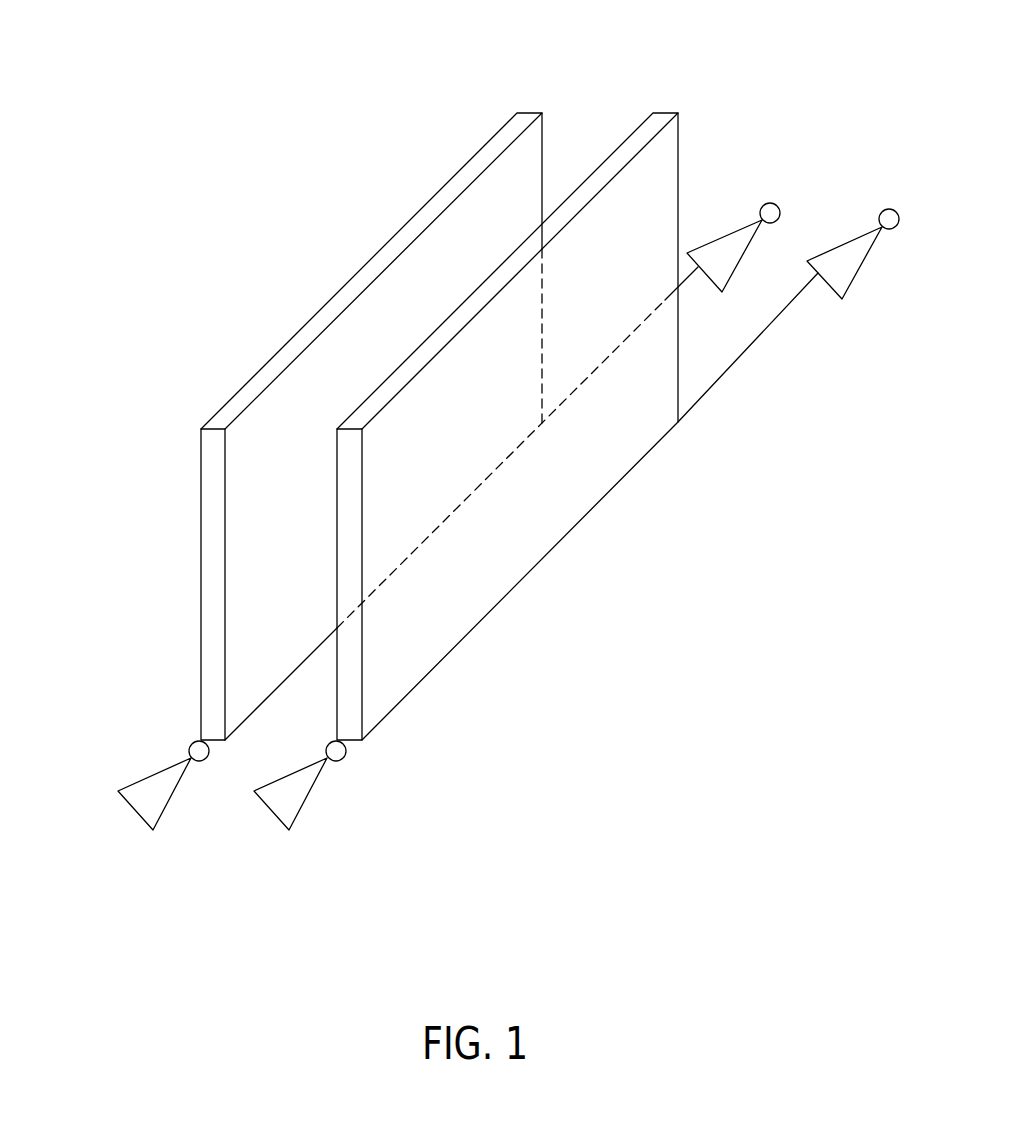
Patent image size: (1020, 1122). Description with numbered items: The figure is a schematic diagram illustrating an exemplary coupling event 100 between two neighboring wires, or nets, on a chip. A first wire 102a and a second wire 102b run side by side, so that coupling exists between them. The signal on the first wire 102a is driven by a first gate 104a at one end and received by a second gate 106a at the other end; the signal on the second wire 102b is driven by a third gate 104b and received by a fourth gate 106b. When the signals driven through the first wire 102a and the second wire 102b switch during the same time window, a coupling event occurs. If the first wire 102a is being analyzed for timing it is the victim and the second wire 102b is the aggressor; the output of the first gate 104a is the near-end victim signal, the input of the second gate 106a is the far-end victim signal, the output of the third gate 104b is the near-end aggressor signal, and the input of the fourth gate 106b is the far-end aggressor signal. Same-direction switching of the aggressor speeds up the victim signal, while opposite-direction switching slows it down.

The coupling event 100 is at (243, 207).
The first wire 102a is at (477, 153).
The second wire 102b is at (663, 112).
The first gate 104a is at (150, 777).
The third gate 104b is at (308, 794).
The second gate 106a is at (732, 231).
The fourth gate 106b is at (856, 237).